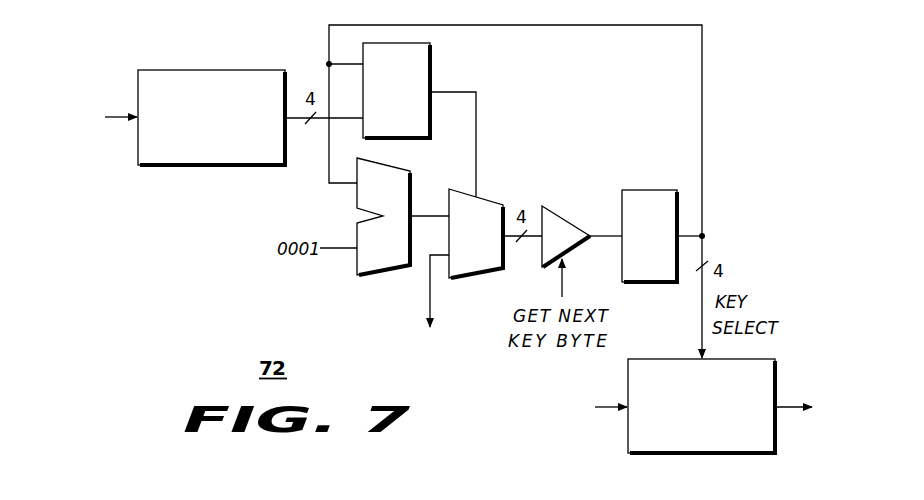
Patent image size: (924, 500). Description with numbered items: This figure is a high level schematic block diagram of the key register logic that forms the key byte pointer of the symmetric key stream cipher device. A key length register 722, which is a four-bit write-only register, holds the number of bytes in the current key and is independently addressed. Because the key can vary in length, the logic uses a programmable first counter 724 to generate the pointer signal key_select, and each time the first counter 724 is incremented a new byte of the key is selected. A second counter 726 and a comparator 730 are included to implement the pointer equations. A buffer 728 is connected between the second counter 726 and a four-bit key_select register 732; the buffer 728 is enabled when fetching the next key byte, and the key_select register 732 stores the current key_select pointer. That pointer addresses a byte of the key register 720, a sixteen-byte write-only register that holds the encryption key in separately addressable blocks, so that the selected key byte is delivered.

The key register 720 is at (777, 363).
The key length register 722 is at (213, 166).
The first counter 724 is at (387, 273).
The second counter 726 is at (488, 200).
The buffer 728 is at (567, 213).
The comparator 730 is at (431, 63).
The key_select register 732 is at (645, 189).